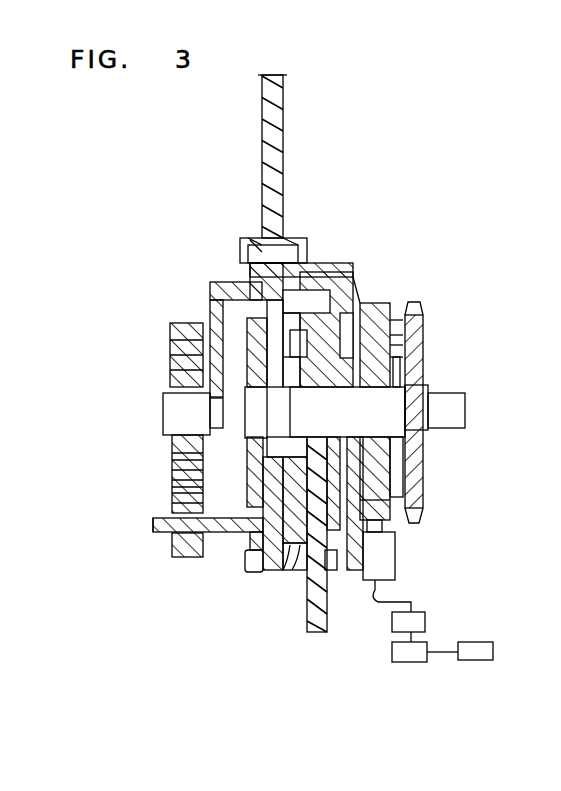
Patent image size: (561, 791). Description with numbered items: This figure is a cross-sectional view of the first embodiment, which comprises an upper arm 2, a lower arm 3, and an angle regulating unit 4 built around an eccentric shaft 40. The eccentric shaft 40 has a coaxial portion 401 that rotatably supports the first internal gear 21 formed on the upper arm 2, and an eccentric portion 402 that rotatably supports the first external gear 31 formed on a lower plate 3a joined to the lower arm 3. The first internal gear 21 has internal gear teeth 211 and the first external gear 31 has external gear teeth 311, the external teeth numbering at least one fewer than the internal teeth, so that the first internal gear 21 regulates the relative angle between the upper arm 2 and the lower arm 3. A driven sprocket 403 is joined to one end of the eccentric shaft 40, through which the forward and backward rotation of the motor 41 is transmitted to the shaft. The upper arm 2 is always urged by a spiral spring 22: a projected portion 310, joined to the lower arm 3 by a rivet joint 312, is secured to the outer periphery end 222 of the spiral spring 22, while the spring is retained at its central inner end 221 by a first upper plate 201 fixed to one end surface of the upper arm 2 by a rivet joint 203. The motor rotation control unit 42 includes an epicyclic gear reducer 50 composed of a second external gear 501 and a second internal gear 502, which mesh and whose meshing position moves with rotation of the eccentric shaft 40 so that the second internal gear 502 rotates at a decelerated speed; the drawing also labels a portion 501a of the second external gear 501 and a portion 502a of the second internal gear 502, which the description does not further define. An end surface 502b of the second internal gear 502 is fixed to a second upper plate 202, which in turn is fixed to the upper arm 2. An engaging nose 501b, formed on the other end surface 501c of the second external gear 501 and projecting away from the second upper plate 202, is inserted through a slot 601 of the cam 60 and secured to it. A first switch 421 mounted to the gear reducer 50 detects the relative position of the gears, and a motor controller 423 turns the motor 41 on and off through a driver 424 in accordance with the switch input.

The upper arm 2 is at (283, 100).
The lower arm 3 is at (320, 617).
The lower plate 3a is at (283, 558).
The angle regulating unit 4 is at (385, 268).
The first internal gear 21 is at (255, 495).
The spiral spring 22 is at (178, 352).
The first external gear 31 is at (265, 457).
The eccentric shaft 40 is at (470, 418).
The motor 41 is at (493, 652).
The motor rotation control unit 42 is at (413, 530).
The epicyclic gear reducer 50 is at (238, 262).
The cam 60 is at (410, 300).
The first upper plate 201 is at (232, 292).
The second upper plate 202 is at (327, 272).
The rivet joint 203 is at (253, 238).
The internal gear teeth 211 is at (262, 572).
The central inner end 221 is at (170, 413).
The outer periphery end 222 is at (205, 556).
The projected portion 310 is at (153, 532).
The external gear teeth 311 is at (265, 478).
The rivet joint 312 is at (265, 572).
The coaxial portion 401 is at (250, 403).
The eccentric portion 402 is at (213, 305).
The driven sprocket 403 is at (396, 335).
The first switch 421 is at (388, 560).
The motor controller 423 is at (425, 622).
The driver 424 is at (392, 652).
The second external gear 501 is at (382, 300).
The gear hub lower portion 501a is at (380, 470).
The engaging nose 501b is at (393, 345).
The other end surface 501c is at (393, 320).
The second internal gear 502 is at (377, 300).
The gear teeth lower 502a is at (380, 497).
The end surface 502b is at (332, 273).
The slot 601 is at (398, 357).